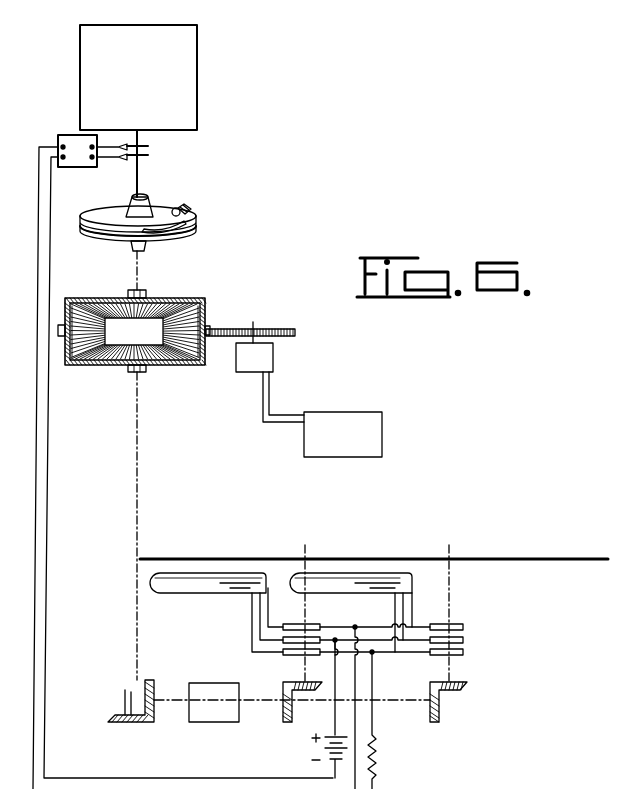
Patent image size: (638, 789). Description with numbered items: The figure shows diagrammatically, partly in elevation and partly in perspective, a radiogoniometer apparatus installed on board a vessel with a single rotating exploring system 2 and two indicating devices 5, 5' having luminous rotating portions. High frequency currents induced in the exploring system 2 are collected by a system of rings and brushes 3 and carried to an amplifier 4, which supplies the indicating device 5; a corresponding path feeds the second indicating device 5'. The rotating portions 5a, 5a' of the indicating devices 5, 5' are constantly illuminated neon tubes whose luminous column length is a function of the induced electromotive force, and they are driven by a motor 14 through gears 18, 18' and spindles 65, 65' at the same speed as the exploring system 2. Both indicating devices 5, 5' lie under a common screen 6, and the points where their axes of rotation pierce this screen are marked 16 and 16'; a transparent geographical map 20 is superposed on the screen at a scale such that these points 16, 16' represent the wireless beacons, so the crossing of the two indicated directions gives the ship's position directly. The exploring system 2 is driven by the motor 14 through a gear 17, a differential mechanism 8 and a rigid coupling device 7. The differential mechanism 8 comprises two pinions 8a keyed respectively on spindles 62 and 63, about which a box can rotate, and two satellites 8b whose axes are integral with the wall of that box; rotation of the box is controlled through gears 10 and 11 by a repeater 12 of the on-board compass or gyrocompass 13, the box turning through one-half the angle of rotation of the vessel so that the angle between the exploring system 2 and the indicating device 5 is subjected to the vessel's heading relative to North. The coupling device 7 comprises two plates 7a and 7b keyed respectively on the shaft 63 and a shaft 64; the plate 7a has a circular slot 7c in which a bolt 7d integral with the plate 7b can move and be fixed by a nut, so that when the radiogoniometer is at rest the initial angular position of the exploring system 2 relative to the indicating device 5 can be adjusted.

The exploring system 2 is at (138, 77).
The system of rings and brushes 3 is at (128, 140).
The amplifier 4 is at (70, 136).
The shaft 64 is at (141, 171).
The coupling device 7 is at (81, 224).
The plate 7a is at (92, 212).
The plate 7b is at (95, 233).
The circular slot 7c is at (158, 226).
The bolt 7d is at (183, 206).
The spindle 63 is at (146, 267).
The differential mechanism 8 is at (195, 298).
The pinion 8a is at (107, 330).
The satellite 8b is at (184, 358).
The gear 10 is at (61, 324).
The gear 11 is at (292, 328).
The repeater 12 is at (270, 372).
The compass or gyrocompass 13 is at (343, 434).
The spindle 62 is at (140, 432).
The geographical map 20 is at (514, 558).
The screen 6 is at (506, 561).
The point of intersection 16 is at (319, 608).
The point of intersection 16' is at (462, 608).
The indicating device 5 is at (216, 610).
The rotating portion 5a is at (206, 595).
The indicating device 5' is at (367, 611).
The rotating portion 5a' is at (342, 595).
The spindle 65 is at (292, 650).
The spindle 65' is at (457, 650).
The gear 17 is at (142, 692).
The motor 14 is at (214, 702).
The gear 18 is at (302, 702).
The gear 18' is at (451, 702).